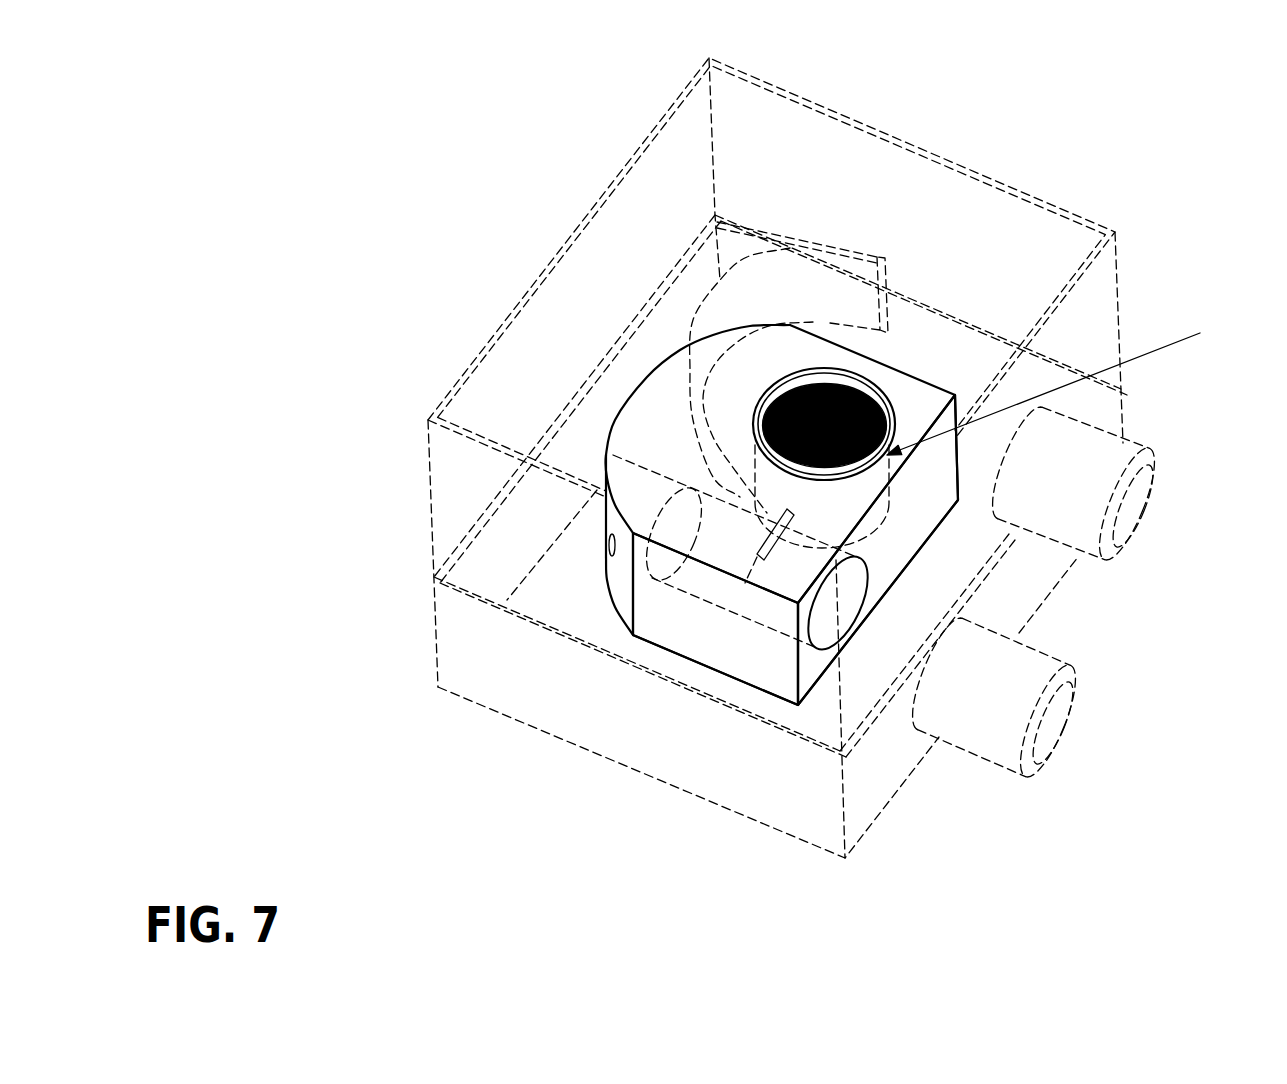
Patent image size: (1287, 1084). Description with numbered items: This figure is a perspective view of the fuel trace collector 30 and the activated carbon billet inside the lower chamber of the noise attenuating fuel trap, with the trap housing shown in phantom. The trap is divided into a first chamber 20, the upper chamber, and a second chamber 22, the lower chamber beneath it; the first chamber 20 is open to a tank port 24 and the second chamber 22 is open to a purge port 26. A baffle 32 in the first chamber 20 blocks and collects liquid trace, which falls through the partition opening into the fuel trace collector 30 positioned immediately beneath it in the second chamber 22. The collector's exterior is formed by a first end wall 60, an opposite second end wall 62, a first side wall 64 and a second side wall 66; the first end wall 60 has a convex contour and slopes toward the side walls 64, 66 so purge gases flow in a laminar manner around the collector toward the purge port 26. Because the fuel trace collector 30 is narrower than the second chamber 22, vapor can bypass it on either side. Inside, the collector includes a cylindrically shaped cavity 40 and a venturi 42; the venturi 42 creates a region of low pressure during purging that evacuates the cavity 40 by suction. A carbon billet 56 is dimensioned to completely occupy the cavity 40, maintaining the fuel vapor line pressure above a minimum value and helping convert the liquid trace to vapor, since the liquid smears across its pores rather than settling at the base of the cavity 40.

The first chamber 20 is at (567, 313).
The second chamber 22 is at (462, 642).
The tank port 24 is at (1102, 462).
The purge port 26 is at (987, 727).
The fuel trace collector 30 is at (737, 678).
The baffle 32 is at (833, 268).
The cavity 40 is at (1057, 380).
The venturi 42 is at (690, 578).
The carbon billet 56 is at (857, 400).
The first end wall 60 is at (620, 592).
The second end wall 62 is at (923, 522).
The first side wall 64 is at (772, 667).
The second side wall 66 is at (850, 378).